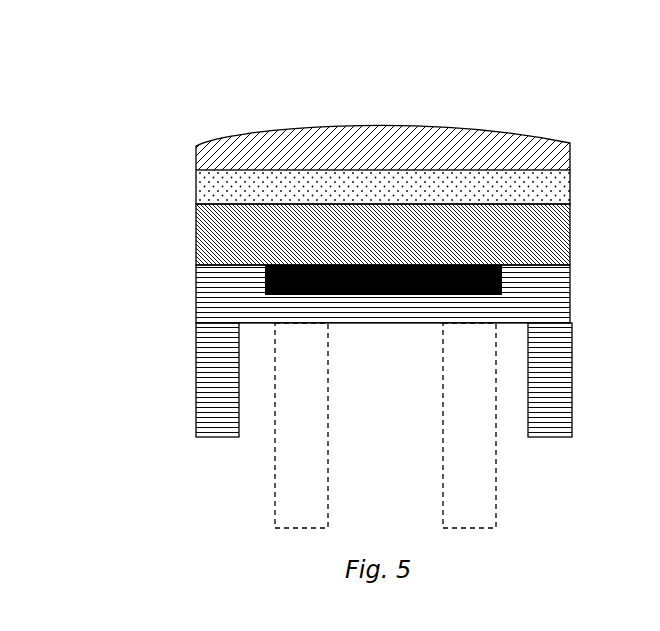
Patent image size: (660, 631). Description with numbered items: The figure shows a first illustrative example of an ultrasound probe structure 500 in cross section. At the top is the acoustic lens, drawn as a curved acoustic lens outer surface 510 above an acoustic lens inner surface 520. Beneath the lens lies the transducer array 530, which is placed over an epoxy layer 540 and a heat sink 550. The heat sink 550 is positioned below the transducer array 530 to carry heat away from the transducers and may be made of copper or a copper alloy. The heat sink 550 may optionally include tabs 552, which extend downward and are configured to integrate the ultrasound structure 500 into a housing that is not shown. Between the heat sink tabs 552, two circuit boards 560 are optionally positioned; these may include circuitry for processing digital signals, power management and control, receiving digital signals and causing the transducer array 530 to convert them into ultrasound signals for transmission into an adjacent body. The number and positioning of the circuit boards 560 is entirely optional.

The probe structure 500 is at (73, 80).
The acoustic lens outer surface 510 is at (570, 152).
The acoustic lens inner surface 520 is at (570, 188).
The transducer array 530 is at (570, 240).
The epoxy layer 540 is at (570, 304).
The heat sink 550 is at (502, 278).
The tabs 552 is at (196, 343).
The circuit boards 560 is at (443, 392).